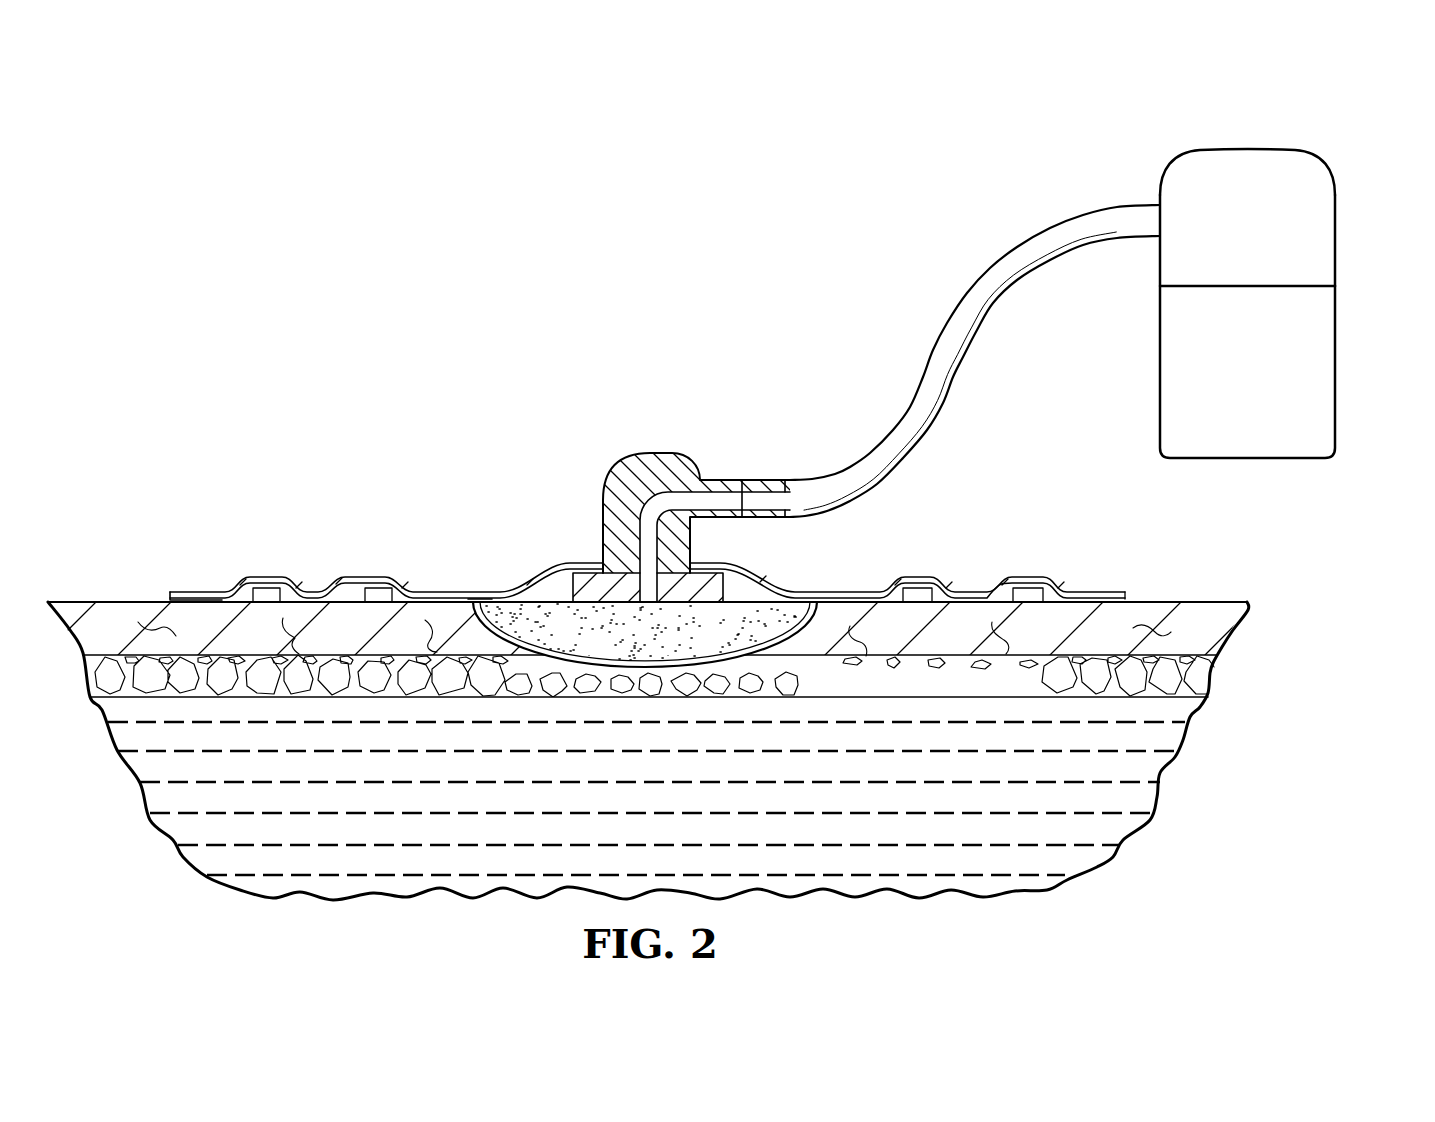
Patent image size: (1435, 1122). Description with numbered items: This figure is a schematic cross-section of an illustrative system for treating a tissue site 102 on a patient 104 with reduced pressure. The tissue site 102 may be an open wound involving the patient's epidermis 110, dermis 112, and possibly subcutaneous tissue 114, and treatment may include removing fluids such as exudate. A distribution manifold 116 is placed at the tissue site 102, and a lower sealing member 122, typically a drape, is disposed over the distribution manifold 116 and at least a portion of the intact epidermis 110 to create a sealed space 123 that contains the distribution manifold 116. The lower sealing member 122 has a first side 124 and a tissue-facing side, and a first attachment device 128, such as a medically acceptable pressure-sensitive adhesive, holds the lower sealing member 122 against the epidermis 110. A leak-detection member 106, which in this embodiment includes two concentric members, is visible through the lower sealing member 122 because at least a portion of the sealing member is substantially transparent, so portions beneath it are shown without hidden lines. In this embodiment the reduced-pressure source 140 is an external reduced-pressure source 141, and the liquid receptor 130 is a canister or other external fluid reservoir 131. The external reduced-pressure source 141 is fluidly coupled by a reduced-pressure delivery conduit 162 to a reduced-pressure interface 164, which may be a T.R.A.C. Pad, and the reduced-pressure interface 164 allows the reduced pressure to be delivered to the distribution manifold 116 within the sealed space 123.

The tissue site 102 is at (684, 721).
The patient 104 is at (1205, 602).
The leak-detection member 106 is at (295, 580).
The epidermis 110 is at (1237, 633).
The dermis 112 is at (1212, 675).
The subcutaneous tissue 114 is at (1160, 803).
The distribution manifold 116 is at (668, 645).
The lower sealing member 122 is at (608, 561).
The sealed space 123 is at (477, 600).
The first side 124 is at (358, 580).
The first attachment device 128 is at (170, 600).
The liquid receptor 130 is at (1291, 275).
The external fluid reservoir 131 is at (1337, 395).
The reduced-pressure source 140 is at (1311, 158).
The external reduced-pressure source 141 is at (1337, 213).
The reduced-pressure delivery conduit 162 is at (1010, 247).
The reduced-pressure interface 164 is at (636, 457).